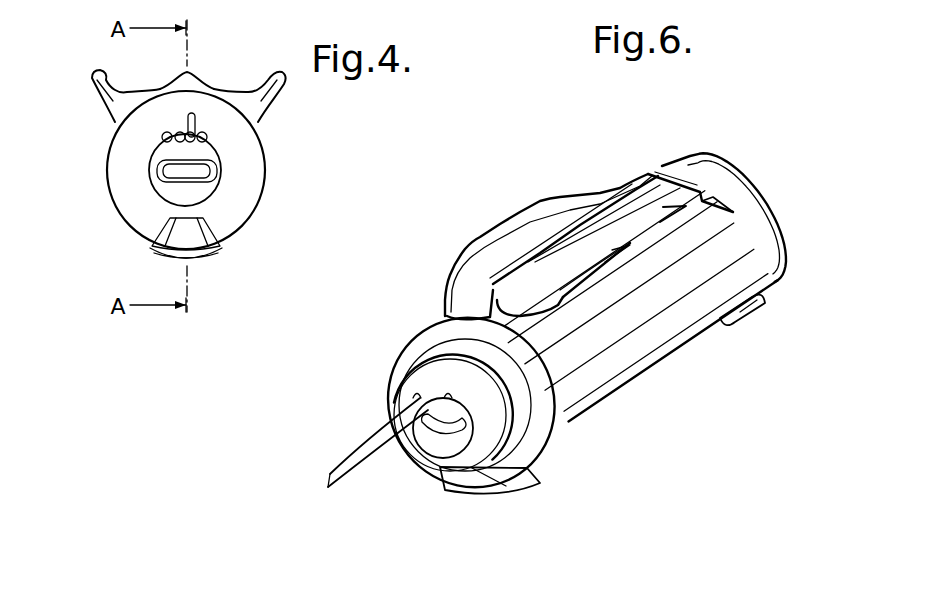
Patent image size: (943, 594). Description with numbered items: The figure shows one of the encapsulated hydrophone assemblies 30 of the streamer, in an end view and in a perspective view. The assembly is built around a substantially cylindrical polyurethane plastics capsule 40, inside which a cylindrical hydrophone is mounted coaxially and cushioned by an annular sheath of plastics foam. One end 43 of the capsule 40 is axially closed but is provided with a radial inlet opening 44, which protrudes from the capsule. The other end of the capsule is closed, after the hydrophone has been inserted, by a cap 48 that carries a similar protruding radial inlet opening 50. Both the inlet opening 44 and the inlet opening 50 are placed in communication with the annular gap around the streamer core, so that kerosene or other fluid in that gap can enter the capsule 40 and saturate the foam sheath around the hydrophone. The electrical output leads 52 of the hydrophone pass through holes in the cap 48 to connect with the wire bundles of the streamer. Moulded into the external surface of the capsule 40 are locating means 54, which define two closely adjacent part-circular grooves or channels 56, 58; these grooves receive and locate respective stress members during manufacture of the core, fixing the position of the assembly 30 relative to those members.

In FIG. 4, the encapsulated hydrophone assembly 30 is at (186, 142).
In FIG. 6, the encapsulated hydrophone assembly 30 is at (550, 304).
In FIG. 4, the capsule 40 is at (121, 226).
In FIG. 6, the capsule 40 is at (645, 360).
In FIG. 6, the one end of the capsule 43 is at (767, 185).
In FIG. 6, the radial inlet opening 44 is at (757, 313).
In FIG. 6, the cap 48 is at (398, 367).
In FIG. 6, the radial inlet opening 50 is at (516, 477).
In FIG. 6, the electrical output leads 52 is at (335, 462).
In FIG. 4, the locating means 54 is at (112, 93).
In FIG. 6, the locating means 54 is at (485, 242).
In FIG. 4, the part-circular groove 56 is at (140, 83).
In FIG. 6, the part-circular groove 56 is at (571, 205).
In FIG. 4, the part-circular groove 58 is at (236, 80).
In FIG. 6, the part-circular groove 58 is at (673, 188).